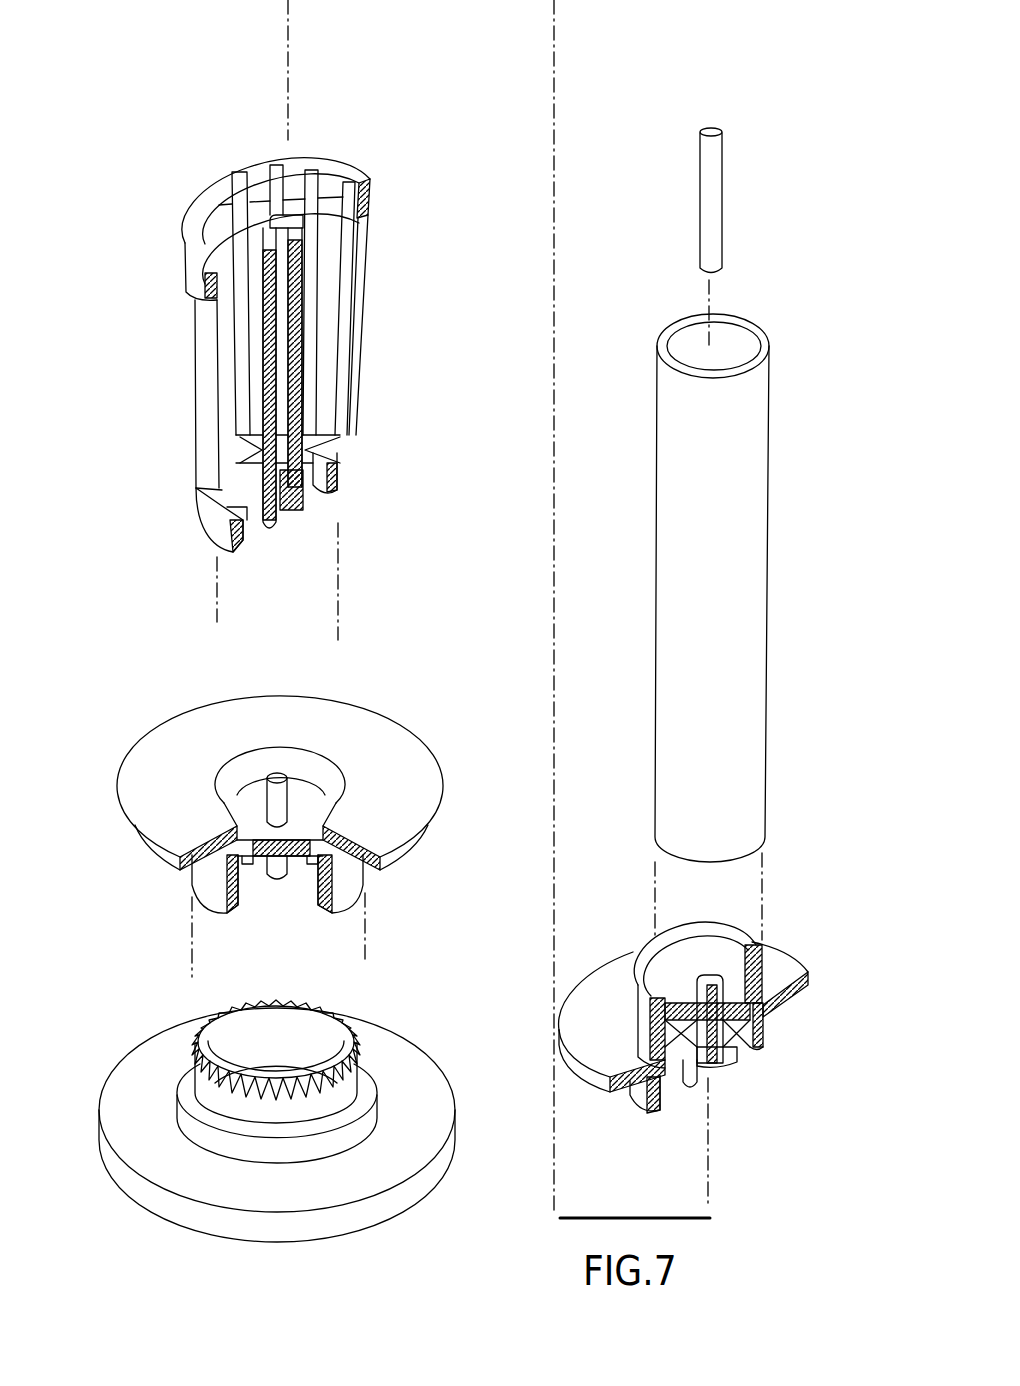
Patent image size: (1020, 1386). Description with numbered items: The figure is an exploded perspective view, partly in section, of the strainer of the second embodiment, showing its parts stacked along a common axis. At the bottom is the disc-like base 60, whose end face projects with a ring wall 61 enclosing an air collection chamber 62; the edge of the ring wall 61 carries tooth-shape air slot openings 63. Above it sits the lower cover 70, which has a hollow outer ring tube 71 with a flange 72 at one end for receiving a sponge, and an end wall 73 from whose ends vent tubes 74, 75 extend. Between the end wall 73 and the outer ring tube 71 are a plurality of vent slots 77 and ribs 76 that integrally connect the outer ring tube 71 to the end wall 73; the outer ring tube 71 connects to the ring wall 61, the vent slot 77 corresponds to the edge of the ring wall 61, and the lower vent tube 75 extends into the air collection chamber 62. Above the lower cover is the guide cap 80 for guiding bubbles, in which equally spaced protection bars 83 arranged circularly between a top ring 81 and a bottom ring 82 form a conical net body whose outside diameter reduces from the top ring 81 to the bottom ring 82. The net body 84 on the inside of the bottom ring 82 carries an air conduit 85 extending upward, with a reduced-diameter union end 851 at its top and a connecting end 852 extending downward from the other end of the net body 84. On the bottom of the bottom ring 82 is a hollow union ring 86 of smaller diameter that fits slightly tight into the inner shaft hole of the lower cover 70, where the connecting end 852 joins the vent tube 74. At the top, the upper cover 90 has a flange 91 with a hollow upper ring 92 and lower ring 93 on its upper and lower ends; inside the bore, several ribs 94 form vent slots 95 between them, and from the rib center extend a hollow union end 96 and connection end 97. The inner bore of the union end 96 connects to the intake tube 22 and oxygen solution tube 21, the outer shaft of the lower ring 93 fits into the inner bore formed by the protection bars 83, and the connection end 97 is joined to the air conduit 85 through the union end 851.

The oxygen solution tube 21 is at (755, 425).
The intake tube 22 is at (715, 203).
The base 60 is at (309, 1106).
The ring wall 61 is at (338, 1105).
The air collection chamber 62 is at (300, 1055).
The tooth-shape air slot openings 63 is at (352, 1000).
The lower cover 70 is at (300, 796).
The outer ring tube 71 is at (207, 872).
The flange 72 is at (163, 810).
The end wall 73 is at (308, 812).
The vent tube 74 is at (286, 780).
The vent tube 75 is at (278, 876).
The ribs 76 is at (308, 784).
The vent slots 77 is at (386, 720).
The guide cap 80 is at (269, 322).
The top ring 81 is at (195, 272).
The bottom ring 82 is at (218, 513).
The protection bars 83 is at (348, 302).
The net body 84 is at (245, 492).
The air conduit 85 is at (355, 289).
The union end 851 is at (290, 150).
The connecting end 852 is at (288, 502).
The union ring 86 is at (318, 480).
The upper cover 90 is at (730, 1031).
The flange 91 is at (783, 965).
The upper ring 92 is at (699, 962).
The lower ring 93 is at (743, 1033).
The ribs 94 is at (679, 1068).
The vent slots 95 is at (648, 1007).
The union end 96 is at (705, 978).
The connection end 97 is at (725, 1063).